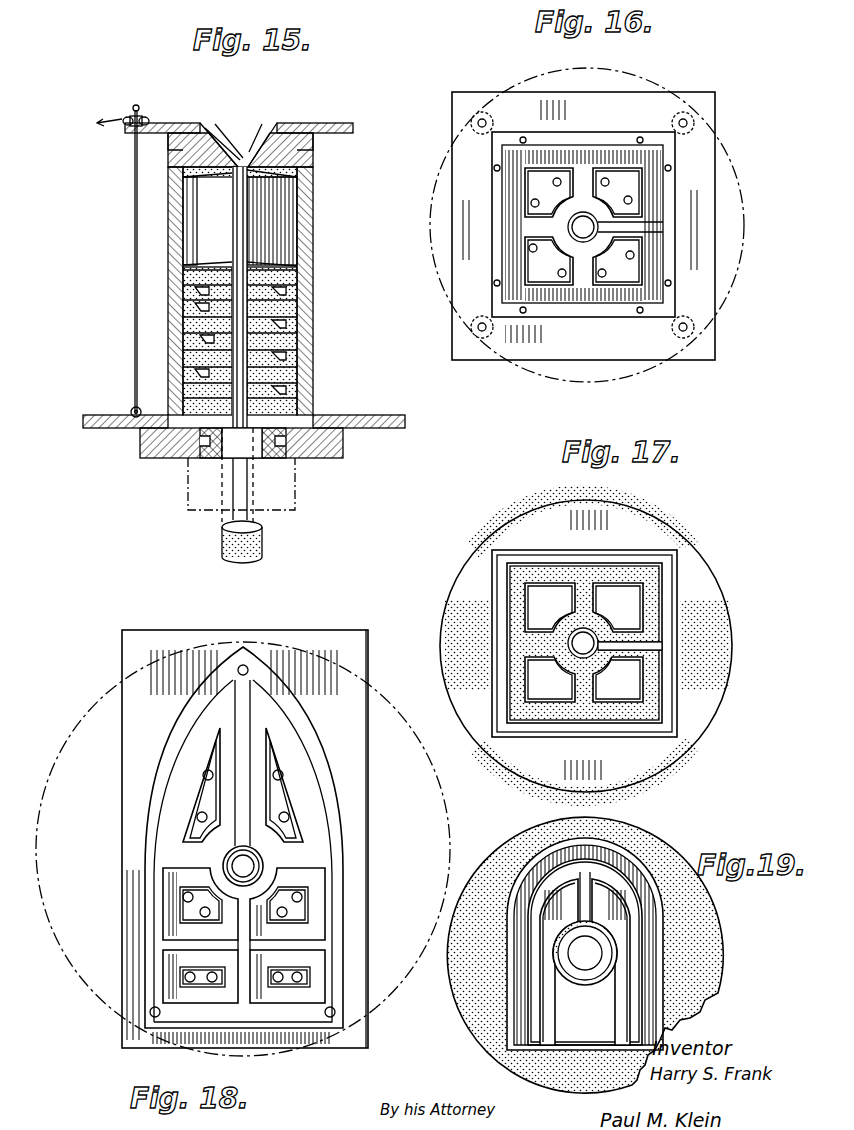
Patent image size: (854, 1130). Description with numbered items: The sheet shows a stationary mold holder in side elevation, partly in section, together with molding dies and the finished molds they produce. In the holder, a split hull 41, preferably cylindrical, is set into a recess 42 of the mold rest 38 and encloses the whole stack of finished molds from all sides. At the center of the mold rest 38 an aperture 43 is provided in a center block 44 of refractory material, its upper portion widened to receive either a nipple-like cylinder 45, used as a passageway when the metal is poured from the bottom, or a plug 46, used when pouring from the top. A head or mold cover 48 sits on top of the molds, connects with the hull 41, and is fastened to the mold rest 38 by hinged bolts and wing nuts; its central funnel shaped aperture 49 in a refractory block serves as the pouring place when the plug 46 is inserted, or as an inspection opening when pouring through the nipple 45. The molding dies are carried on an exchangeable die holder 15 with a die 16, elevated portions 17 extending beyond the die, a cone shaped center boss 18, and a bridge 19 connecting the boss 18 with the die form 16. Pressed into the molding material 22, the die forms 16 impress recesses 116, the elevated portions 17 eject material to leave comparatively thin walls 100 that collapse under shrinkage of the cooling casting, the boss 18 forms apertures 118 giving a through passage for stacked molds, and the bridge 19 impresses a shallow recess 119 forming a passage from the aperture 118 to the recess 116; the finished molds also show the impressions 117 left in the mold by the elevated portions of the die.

In FIG. 16, the die holder 15 is at (700, 172).
In FIG. 18, the die holder 15 is at (348, 640).
In FIG. 16, the die 16 is at (665, 308).
In FIG. 18, the die 16 is at (325, 802).
In FIG. 16, the elevated portions 17 is at (620, 182).
In FIG. 18, the elevated portions 17 is at (305, 977).
In FIG. 16, the boss 18 is at (585, 212).
In FIG. 18, the boss 18 is at (232, 862).
In FIG. 16, the bridge 19 is at (660, 227).
In FIG. 18, the bridge 19 is at (262, 868).
In FIG. 17, the molding material 22 is at (638, 517).
In FIG. 19, the molding material 22 is at (703, 908).
In FIG. 15, the mold rest 38 is at (338, 415).
In FIG. 15, the split hull 41 is at (313, 372).
In FIG. 15, the recess 42 is at (343, 445).
In FIG. 15, the aperture 43 is at (240, 460).
In FIG. 15, the center block 44 is at (270, 458).
In FIG. 15, the nipple-like cylinder 45 is at (190, 458).
In FIG. 15, the plug 46 is at (262, 540).
In FIG. 15, the mold cover 48 is at (318, 148).
In FIG. 15, the funnel shaped aperture 49 is at (243, 135).
In FIG. 17, the thin walls 100 is at (650, 712).
In FIG. 19, the thin walls 100 is at (628, 1026).
In FIG. 17, the recesses 116 is at (650, 561).
In FIG. 19, the recesses 116 is at (650, 956).
In FIG. 17, the mold cavities 117 is at (627, 600).
In FIG. 19, the mold cavities 117 is at (612, 905).
In FIG. 17, the apertures 118 is at (578, 650).
In FIG. 19, the apertures 118 is at (591, 963).
In FIG. 17, the shallow recess 119 is at (645, 648).
In FIG. 19, the shallow recess 119 is at (582, 905).